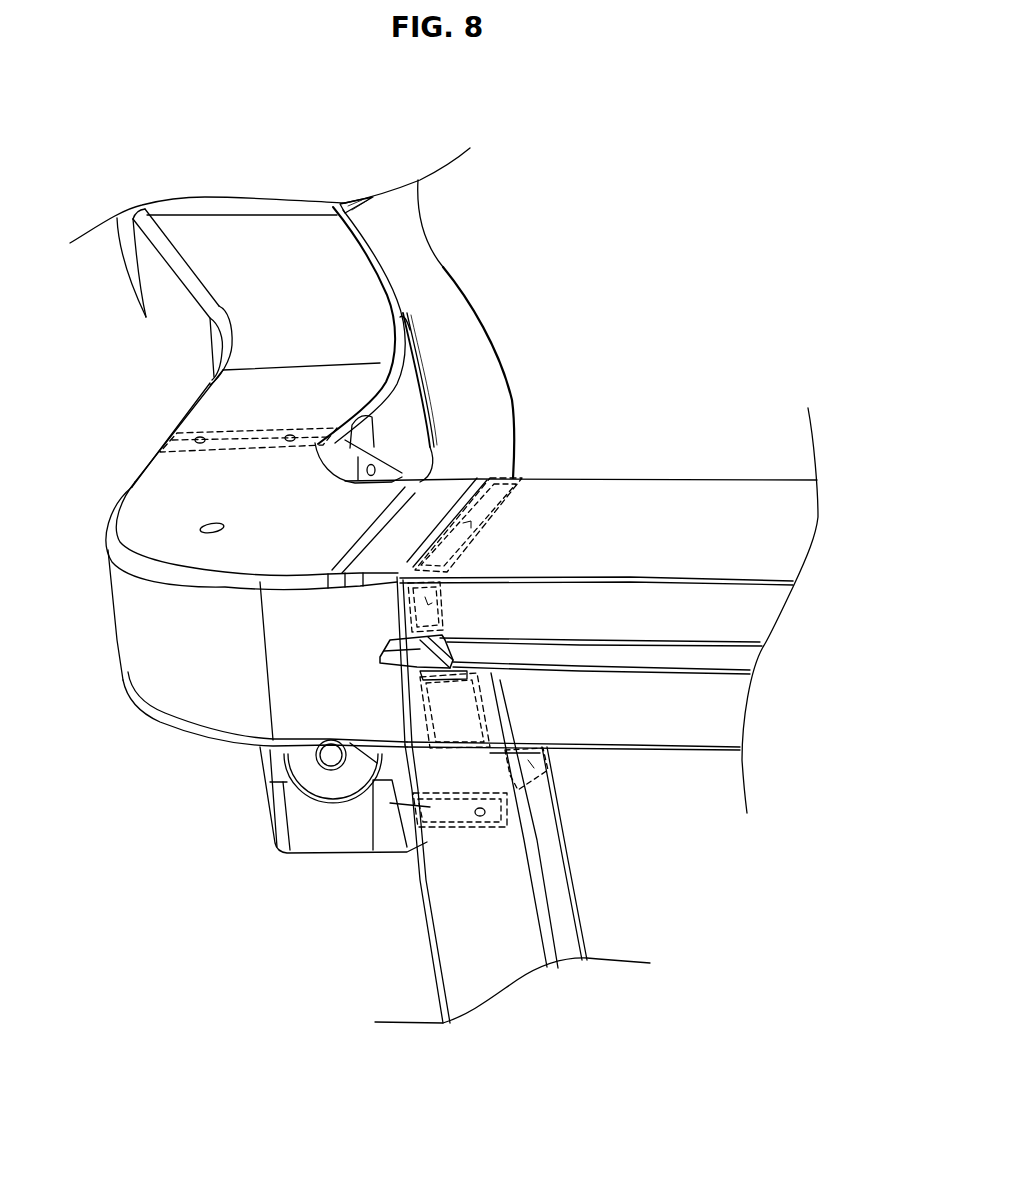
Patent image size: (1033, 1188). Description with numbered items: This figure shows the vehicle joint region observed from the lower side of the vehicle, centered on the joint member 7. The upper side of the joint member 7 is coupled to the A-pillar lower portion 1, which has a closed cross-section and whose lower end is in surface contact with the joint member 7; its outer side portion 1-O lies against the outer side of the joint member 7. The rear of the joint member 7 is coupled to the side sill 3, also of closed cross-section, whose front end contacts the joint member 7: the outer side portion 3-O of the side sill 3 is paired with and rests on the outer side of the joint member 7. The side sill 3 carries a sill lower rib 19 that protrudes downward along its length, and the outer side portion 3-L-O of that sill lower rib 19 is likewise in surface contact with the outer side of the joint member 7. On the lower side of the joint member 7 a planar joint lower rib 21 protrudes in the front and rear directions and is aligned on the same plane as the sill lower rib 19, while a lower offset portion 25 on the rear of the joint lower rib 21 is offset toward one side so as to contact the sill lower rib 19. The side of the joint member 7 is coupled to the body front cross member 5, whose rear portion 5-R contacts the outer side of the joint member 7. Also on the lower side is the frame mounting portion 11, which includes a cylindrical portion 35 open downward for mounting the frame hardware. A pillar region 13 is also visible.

The A-pillar lower portion 1 is at (165, 322).
The outer side portion 1-O is at (180, 440).
The pillar 13 is at (423, 273).
The joint member 7 is at (160, 692).
The side sill 3 is at (708, 735).
The sill lower rib 19 is at (647, 653).
The outer side portion 3-O is at (467, 523).
The outer side portion 3-L-O is at (427, 605).
The joint lower rib 21 is at (382, 662).
The lower offset portion 25 is at (443, 677).
The body front cross member 5 is at (557, 885).
The rear portion 5-R is at (527, 767).
The frame mounting portion 11 is at (345, 782).
The cylindrical portion 35 is at (322, 753).